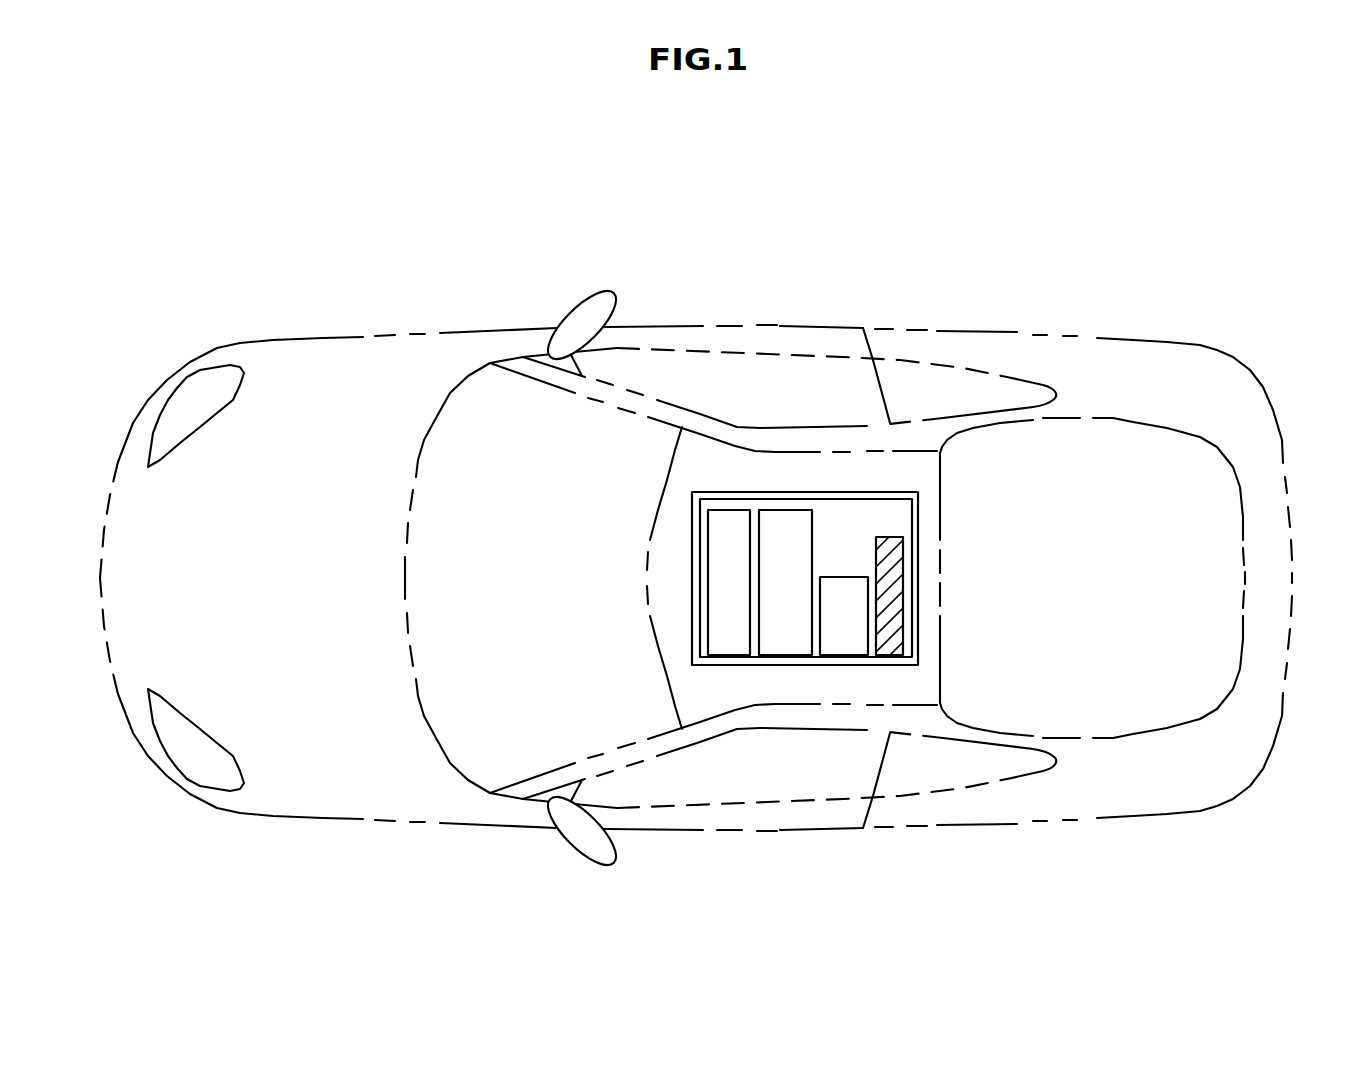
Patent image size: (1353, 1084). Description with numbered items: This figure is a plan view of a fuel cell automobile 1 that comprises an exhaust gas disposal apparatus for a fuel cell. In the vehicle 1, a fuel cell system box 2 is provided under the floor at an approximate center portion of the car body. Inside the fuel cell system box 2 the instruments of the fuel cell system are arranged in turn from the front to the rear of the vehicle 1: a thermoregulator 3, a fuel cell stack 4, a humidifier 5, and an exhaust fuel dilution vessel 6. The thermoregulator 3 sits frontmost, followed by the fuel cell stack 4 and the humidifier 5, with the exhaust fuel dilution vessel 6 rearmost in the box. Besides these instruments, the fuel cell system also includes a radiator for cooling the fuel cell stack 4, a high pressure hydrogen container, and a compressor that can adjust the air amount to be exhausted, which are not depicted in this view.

The fuel cell automobile 1 is at (837, 268).
The fuel cell system box 2 is at (800, 482).
The thermoregulator 3 is at (733, 633).
The fuel cell stack 4 is at (790, 633).
The humidifier 5 is at (848, 633).
The exhaust fuel dilution vessel 6 is at (888, 545).